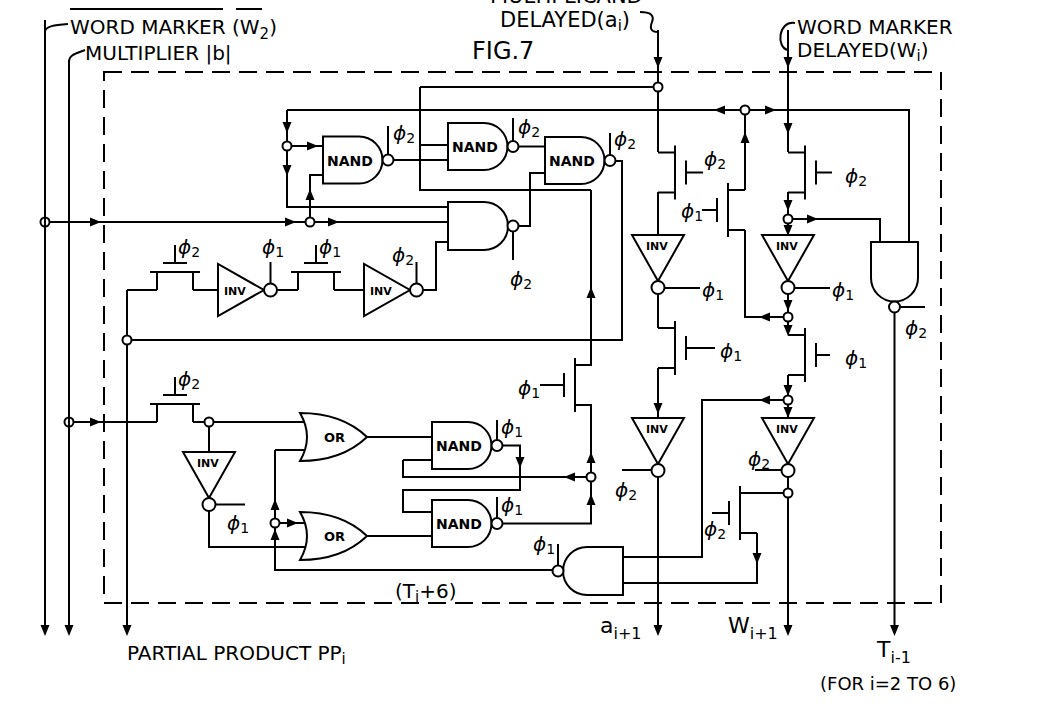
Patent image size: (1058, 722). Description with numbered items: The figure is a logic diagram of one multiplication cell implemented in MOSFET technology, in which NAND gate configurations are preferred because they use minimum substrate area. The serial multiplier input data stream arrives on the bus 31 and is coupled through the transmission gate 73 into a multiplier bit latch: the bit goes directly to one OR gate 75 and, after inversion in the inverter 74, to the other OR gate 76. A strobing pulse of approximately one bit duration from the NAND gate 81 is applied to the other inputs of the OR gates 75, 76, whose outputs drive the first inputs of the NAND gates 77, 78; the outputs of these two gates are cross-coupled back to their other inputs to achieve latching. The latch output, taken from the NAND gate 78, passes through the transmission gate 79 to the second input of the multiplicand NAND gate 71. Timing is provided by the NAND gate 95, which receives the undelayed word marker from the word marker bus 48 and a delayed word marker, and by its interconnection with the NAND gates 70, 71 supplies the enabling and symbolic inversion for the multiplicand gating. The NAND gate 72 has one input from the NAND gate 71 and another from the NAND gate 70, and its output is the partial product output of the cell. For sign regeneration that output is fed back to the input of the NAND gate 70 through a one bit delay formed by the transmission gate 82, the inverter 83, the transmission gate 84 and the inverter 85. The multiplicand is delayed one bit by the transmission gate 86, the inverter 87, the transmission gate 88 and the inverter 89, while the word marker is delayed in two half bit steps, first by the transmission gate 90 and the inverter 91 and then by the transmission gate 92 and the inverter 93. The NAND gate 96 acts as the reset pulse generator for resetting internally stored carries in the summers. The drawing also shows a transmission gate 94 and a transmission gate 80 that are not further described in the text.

The bus 31 is at (69, 536).
The word marker bus 48 is at (47, 574).
The NAND gate 70 is at (460, 251).
The NAND gate 71 is at (483, 171).
The NAND gate 72 is at (589, 137).
The transmission gate 73 is at (175, 410).
The inverter 74 is at (197, 478).
The OR gate 75 is at (335, 413).
The OR gate 76 is at (336, 512).
The NAND gate 77 is at (457, 421).
The NAND gate 78 is at (481, 548).
The transmission gate 79 is at (580, 384).
The transistor 80 is at (731, 500).
The NAND gate 81 is at (608, 527).
The transmission gate 82 is at (176, 282).
The inverter 83 is at (242, 303).
The transmission gate 84 is at (321, 282).
The inverter 85 is at (392, 302).
The transmission gate 86 is at (674, 172).
The inverter 87 is at (671, 250).
The transmission gate 88 is at (672, 348).
The inverter 89 is at (641, 437).
The transmission gate 90 is at (800, 167).
The inverter 91 is at (777, 258).
The transmission gate 92 is at (800, 356).
The inverter 93 is at (798, 446).
The transistor 94 is at (735, 207).
The NAND gate 95 is at (353, 136).
The NAND gate 96 is at (871, 258).